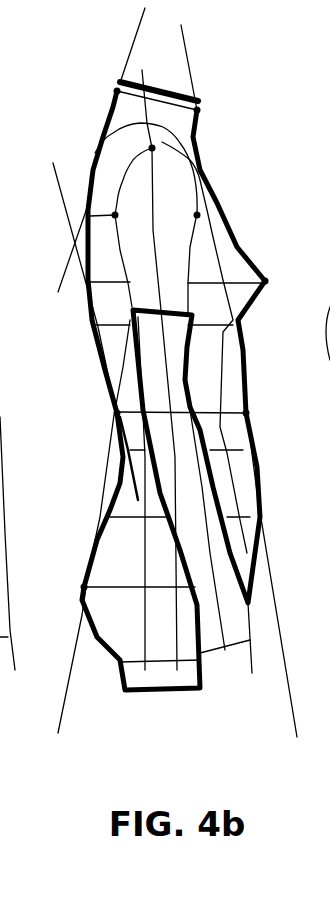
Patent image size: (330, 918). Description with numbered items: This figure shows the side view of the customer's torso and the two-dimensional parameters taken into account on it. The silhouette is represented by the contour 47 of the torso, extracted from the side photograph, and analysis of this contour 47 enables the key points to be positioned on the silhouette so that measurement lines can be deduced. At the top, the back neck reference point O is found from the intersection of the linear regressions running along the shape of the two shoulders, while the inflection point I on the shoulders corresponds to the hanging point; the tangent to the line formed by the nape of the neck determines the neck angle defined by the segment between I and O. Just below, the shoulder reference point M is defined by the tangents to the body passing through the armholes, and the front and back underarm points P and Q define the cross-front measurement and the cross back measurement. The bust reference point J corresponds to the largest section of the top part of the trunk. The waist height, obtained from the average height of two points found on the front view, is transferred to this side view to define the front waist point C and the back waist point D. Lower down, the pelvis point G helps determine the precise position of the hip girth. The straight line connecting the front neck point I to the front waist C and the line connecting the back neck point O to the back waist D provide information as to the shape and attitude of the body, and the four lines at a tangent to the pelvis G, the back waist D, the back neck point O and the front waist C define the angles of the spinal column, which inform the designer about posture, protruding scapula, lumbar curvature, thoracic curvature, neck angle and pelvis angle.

The contour of the torso 47 is at (112, 117).
The back neck reference point O is at (101, 70).
The inflection point on the shoulders I is at (210, 111).
The shoulder reference point M is at (142, 169).
The back underarm point Q is at (131, 223).
The front underarm point P is at (181, 223).
The bust reference point J is at (277, 284).
The back waist point D is at (96, 413).
The front waist point C is at (260, 413).
The pelvis point G is at (69, 588).